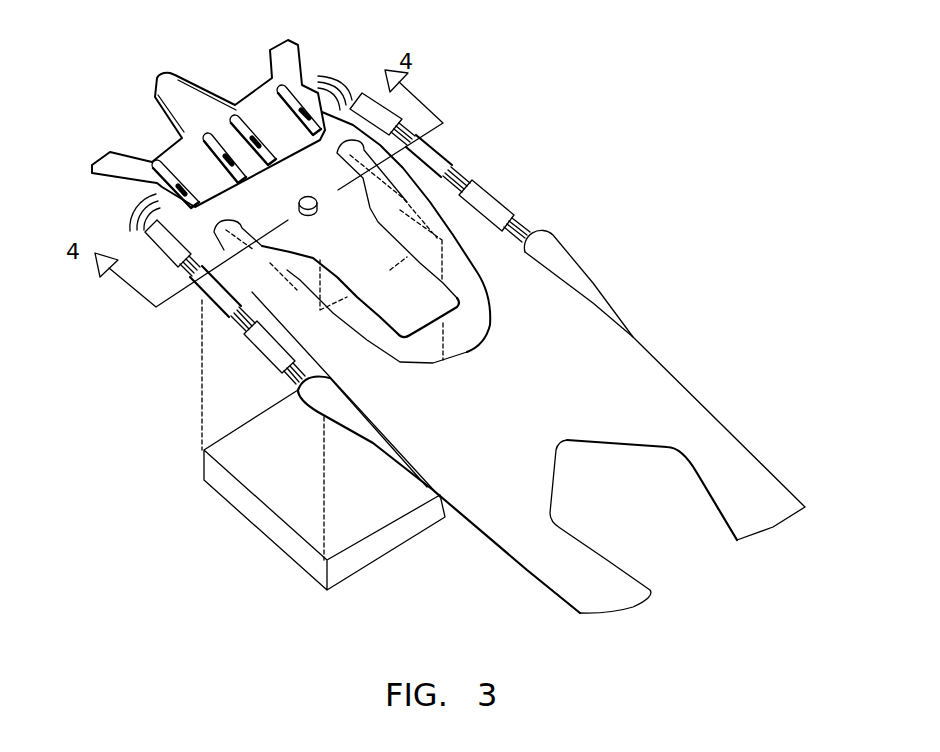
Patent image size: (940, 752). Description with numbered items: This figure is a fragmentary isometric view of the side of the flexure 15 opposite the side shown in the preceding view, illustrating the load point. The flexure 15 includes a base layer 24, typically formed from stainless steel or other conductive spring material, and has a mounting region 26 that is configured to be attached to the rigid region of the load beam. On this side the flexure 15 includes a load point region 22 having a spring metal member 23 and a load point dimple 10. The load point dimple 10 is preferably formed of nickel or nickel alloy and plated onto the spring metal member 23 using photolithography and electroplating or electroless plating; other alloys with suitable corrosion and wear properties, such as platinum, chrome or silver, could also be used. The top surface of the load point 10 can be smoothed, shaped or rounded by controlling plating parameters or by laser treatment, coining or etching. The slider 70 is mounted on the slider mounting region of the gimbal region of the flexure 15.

The load point dimple 10 is at (303, 198).
The flexure 15 is at (780, 366).
The load point region 22 is at (387, 255).
The spring metal member 23 is at (320, 253).
The base layer 24 is at (585, 363).
The mounting region 26 is at (528, 547).
The slider 70 is at (367, 565).